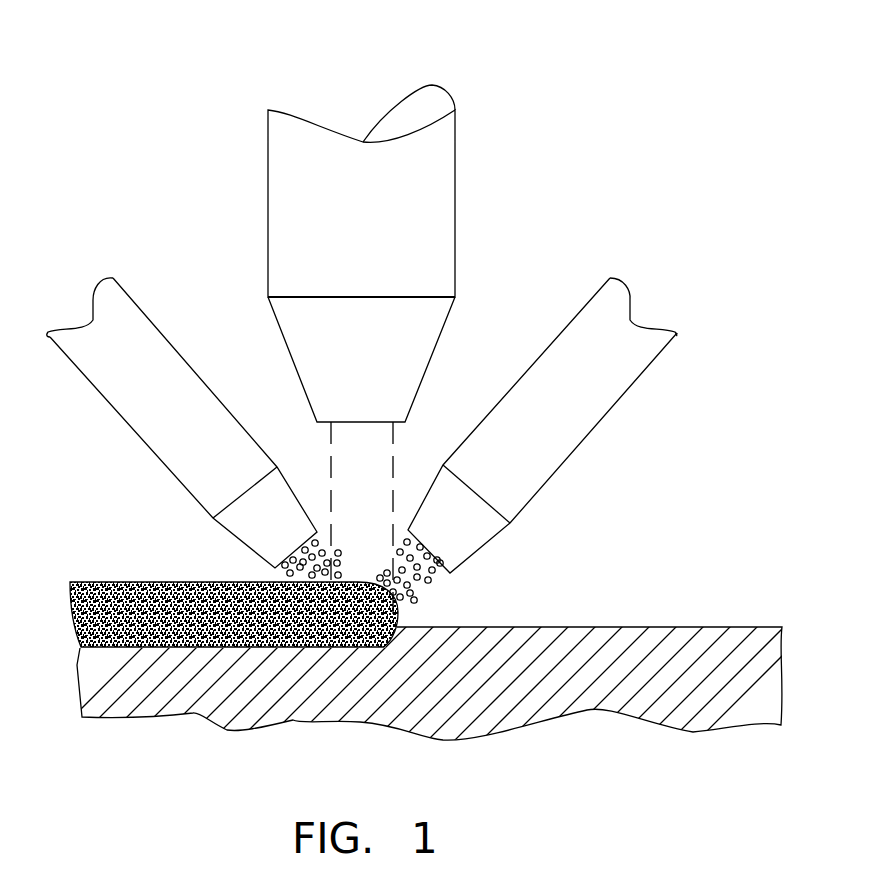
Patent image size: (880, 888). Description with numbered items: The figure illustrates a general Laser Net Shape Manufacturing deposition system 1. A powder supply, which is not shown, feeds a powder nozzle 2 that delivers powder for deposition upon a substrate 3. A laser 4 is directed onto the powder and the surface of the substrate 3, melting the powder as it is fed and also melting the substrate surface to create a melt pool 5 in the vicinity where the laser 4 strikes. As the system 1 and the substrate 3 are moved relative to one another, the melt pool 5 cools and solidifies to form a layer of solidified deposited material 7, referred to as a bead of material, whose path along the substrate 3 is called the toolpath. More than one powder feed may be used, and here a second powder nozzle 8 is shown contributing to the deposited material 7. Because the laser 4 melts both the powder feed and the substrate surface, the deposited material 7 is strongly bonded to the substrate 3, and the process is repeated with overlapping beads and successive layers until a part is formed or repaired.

The system 1 is at (600, 66).
The powder nozzle 2 is at (148, 313).
The substrate 3 is at (702, 627).
The laser 4 is at (388, 458).
The melt pool 5 is at (398, 622).
The deposited material 7 is at (183, 580).
The second powder nozzle 8 is at (652, 370).